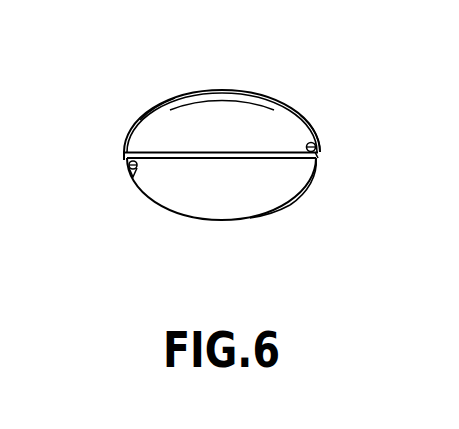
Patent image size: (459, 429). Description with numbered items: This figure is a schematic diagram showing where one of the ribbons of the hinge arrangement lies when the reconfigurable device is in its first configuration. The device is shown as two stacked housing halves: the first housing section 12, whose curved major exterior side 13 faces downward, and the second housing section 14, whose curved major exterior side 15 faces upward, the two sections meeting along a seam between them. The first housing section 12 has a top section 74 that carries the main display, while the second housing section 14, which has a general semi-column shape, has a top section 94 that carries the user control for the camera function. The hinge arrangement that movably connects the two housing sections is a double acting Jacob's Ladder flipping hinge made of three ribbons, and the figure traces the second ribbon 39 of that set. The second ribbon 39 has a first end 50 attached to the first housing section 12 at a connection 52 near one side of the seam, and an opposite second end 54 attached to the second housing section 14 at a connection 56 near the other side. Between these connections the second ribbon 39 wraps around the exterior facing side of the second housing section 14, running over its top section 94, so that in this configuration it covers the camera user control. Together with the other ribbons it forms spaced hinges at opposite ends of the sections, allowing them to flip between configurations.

The first housing section 12 is at (222, 192).
The major exterior side 13 is at (272, 212).
The second housing section 14 is at (253, 118).
The major exterior side 15 is at (303, 115).
The second ribbon 39 is at (168, 100).
The first end 50 is at (123, 162).
The connection 52 is at (132, 177).
The second end 54 is at (317, 146).
The connection 56 is at (318, 151).
The top section 74 is at (302, 192).
The top section 94 is at (220, 91).